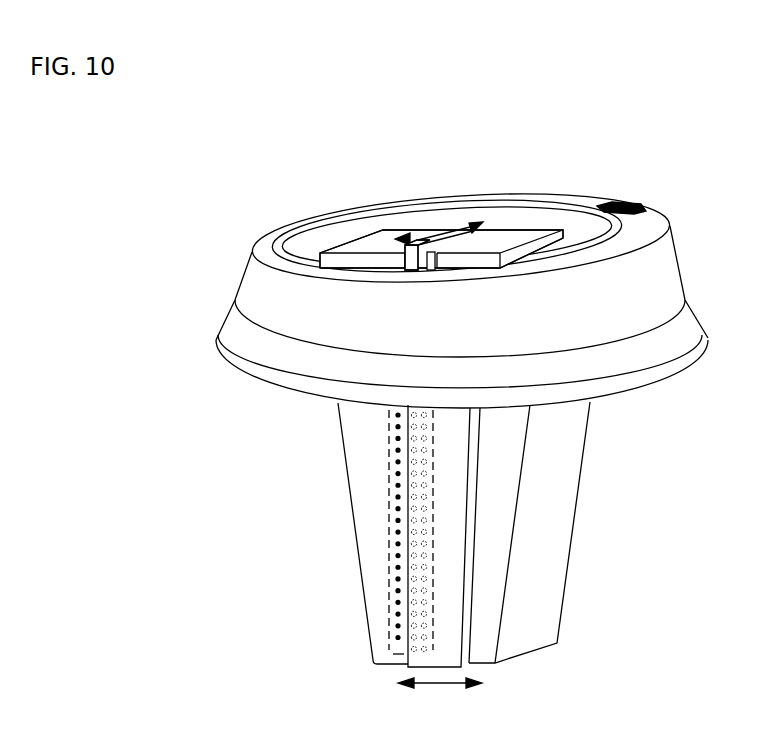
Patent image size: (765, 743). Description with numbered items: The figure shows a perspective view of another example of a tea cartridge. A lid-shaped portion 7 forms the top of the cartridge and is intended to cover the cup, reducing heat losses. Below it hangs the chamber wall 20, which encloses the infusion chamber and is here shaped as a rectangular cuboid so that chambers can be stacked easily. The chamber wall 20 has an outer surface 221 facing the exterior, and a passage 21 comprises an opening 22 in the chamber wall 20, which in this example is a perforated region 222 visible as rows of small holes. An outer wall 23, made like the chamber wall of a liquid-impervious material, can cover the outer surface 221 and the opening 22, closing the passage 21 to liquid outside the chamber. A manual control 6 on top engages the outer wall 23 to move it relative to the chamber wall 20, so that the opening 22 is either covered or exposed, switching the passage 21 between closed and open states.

The lid-shaped portion 7 is at (647, 224).
The chamber wall 20 is at (503, 238).
The manual control 6 is at (431, 266).
The passage 21 is at (388, 621).
The opening 22 is at (396, 497).
The outer surface 221 is at (567, 514).
The perforated region 222 is at (390, 552).
The outer wall 23 is at (458, 635).